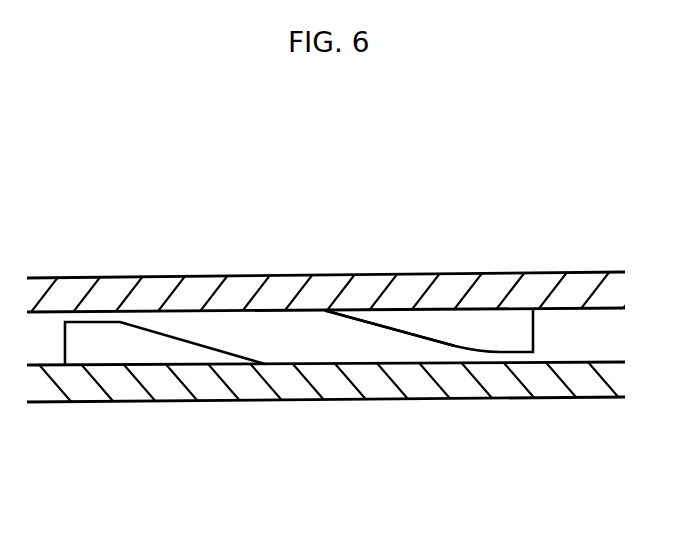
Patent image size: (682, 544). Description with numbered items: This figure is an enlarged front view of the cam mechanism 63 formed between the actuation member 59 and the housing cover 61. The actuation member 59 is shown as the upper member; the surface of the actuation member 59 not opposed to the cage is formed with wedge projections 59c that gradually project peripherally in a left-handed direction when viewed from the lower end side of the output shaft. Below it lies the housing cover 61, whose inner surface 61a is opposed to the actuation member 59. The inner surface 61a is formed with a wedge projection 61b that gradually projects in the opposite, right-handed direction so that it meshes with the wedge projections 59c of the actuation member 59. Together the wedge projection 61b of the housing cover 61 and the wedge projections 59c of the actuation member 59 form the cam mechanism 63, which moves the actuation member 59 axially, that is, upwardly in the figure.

The actuation member 59 is at (250, 277).
The wedge projections 59c is at (382, 327).
The housing cover 61 is at (555, 398).
The inner surface 61a is at (424, 362).
The wedge projection 61b is at (185, 337).
The cam mechanism 63 is at (330, 338).